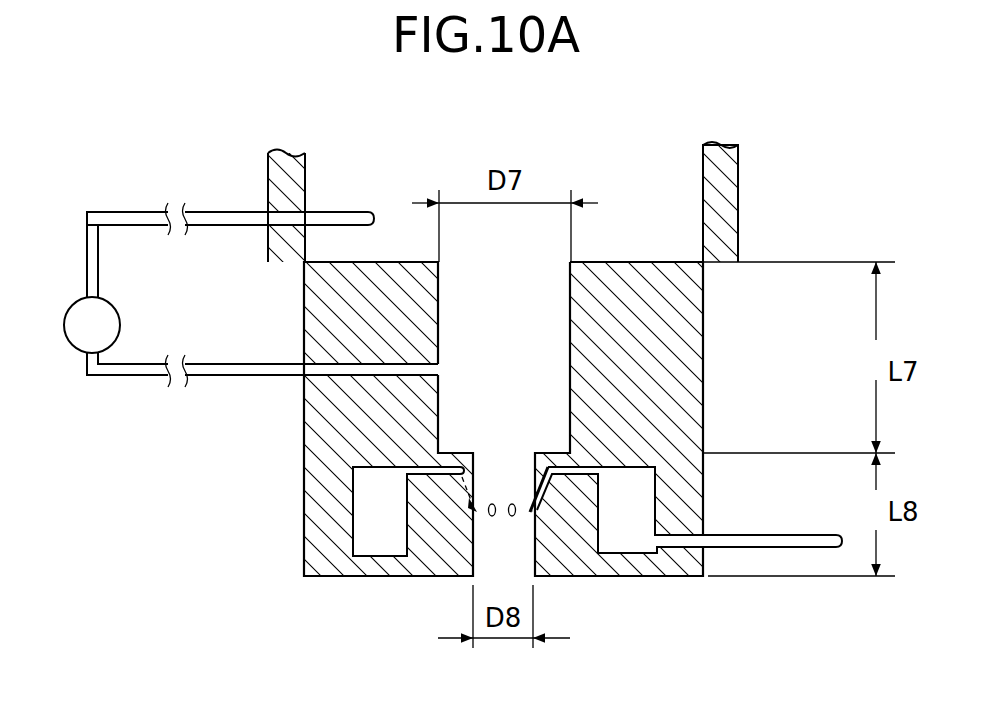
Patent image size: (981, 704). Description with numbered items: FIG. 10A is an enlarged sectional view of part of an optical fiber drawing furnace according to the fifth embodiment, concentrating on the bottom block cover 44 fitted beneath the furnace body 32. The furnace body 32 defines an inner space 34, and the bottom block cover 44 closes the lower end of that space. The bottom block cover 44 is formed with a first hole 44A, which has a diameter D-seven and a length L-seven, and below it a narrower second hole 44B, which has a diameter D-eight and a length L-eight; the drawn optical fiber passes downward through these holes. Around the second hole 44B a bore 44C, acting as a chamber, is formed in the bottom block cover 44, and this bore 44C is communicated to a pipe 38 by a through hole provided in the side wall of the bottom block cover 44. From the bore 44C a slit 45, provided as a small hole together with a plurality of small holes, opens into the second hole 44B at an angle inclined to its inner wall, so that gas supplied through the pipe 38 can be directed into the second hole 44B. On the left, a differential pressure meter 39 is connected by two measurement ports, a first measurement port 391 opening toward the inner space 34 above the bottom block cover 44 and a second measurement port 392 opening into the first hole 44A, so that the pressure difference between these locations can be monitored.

The furnace body 32 is at (728, 176).
The inner space 34 is at (627, 225).
The pipe 38 is at (745, 536).
The differential pressure meter 39 is at (108, 300).
The measurement port 391 is at (208, 207).
The measurement port 392 is at (205, 360).
The bottom block cover 44 is at (703, 376).
The first hole 44A is at (567, 310).
The second hole 44B is at (542, 562).
The bore 44C is at (372, 540).
The slit 45 is at (493, 518).